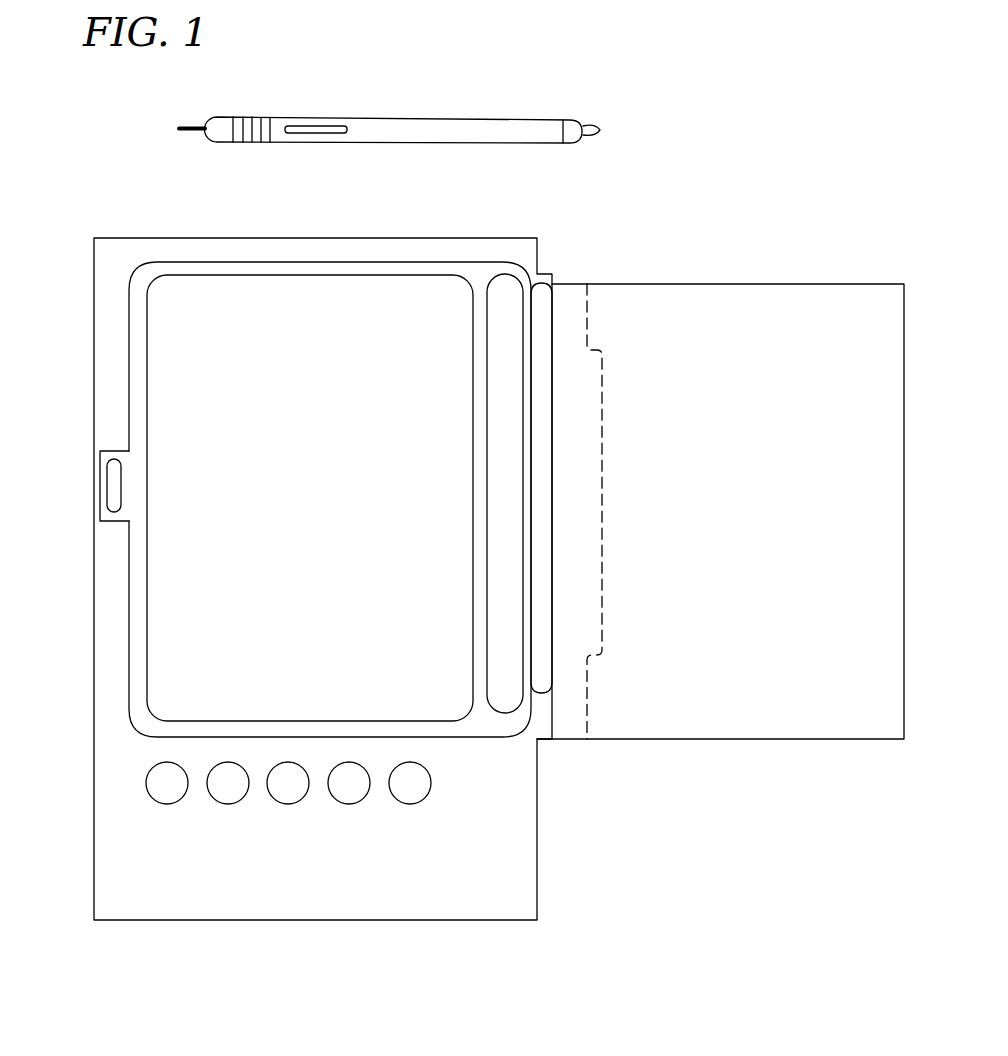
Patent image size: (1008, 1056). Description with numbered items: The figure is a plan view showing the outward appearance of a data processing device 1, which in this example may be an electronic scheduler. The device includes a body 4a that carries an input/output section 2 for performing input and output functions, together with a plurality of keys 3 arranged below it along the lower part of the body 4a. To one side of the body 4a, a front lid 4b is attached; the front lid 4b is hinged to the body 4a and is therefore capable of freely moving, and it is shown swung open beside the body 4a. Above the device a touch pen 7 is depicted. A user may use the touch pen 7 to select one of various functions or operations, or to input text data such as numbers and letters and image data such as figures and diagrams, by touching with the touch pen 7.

The data processing device 1 is at (468, 568).
The input/output section 2 is at (145, 640).
The keys 3 is at (226, 803).
The body 4a is at (401, 237).
The front lid 4b is at (785, 300).
The touch pen 7 is at (455, 118).